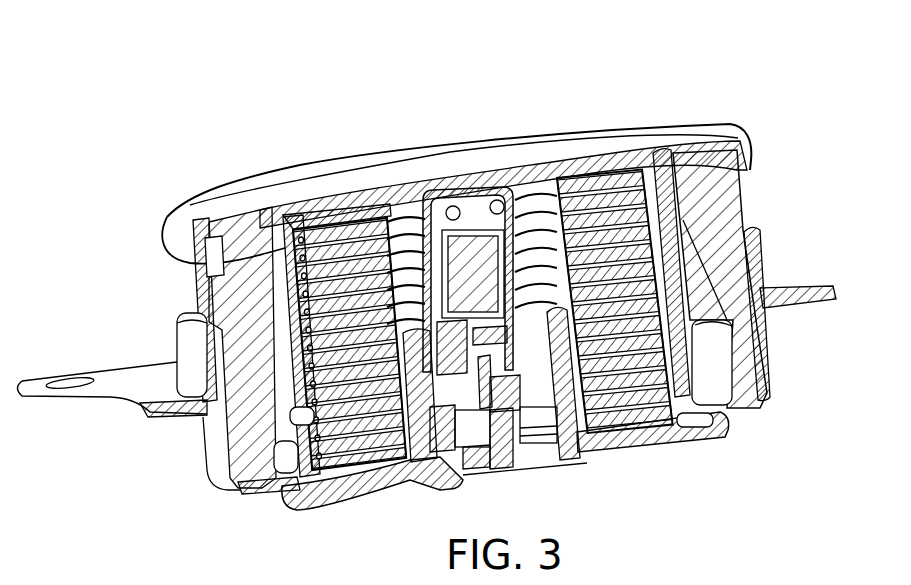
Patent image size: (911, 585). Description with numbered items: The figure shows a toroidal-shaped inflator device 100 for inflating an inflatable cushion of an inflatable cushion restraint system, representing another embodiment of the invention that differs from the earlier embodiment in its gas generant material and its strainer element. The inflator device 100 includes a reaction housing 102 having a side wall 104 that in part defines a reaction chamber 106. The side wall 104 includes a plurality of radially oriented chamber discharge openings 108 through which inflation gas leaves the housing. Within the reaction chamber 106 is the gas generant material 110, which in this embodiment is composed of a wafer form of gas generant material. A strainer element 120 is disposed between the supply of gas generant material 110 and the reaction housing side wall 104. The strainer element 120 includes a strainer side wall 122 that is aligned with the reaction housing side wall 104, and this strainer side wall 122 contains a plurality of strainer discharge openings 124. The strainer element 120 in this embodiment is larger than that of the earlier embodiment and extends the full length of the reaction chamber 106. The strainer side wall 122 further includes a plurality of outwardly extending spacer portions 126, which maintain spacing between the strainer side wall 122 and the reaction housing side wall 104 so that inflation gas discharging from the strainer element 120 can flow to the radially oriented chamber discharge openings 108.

The inflator device 100 is at (400, 105).
The reaction housing 102 is at (695, 458).
The side wall 104 is at (680, 203).
The reaction chamber 106 is at (372, 487).
The chamber discharge openings 108 is at (693, 353).
The gas generant material 110 is at (612, 176).
The strainer element 120 is at (715, 418).
The strainer side wall 122 is at (288, 230).
The strainer discharge openings 124 is at (272, 278).
The spacer portions 126 is at (680, 277).